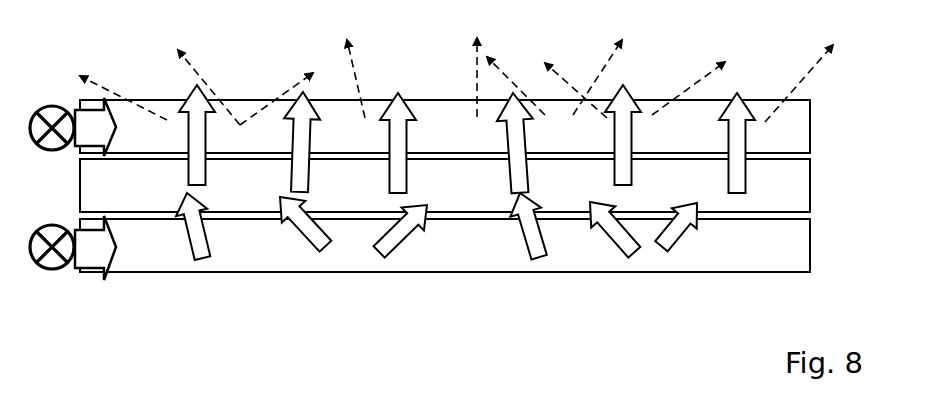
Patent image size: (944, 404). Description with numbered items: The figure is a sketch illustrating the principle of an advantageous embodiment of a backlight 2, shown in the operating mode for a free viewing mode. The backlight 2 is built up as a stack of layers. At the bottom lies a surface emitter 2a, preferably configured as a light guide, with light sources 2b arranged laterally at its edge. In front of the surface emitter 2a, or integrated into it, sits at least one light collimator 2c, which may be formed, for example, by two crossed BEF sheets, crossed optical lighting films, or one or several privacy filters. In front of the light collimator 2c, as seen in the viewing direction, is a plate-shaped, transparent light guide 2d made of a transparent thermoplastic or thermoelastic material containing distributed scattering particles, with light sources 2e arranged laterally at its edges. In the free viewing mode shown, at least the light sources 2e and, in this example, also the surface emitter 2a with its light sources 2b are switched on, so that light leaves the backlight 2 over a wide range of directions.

The backlight 2 is at (469, 155).
The surface emitter 2a is at (445, 229).
The light sources 2b is at (60, 275).
The light collimator 2c is at (445, 185).
The light guide 2d is at (445, 126).
The light sources 2e is at (50, 98).